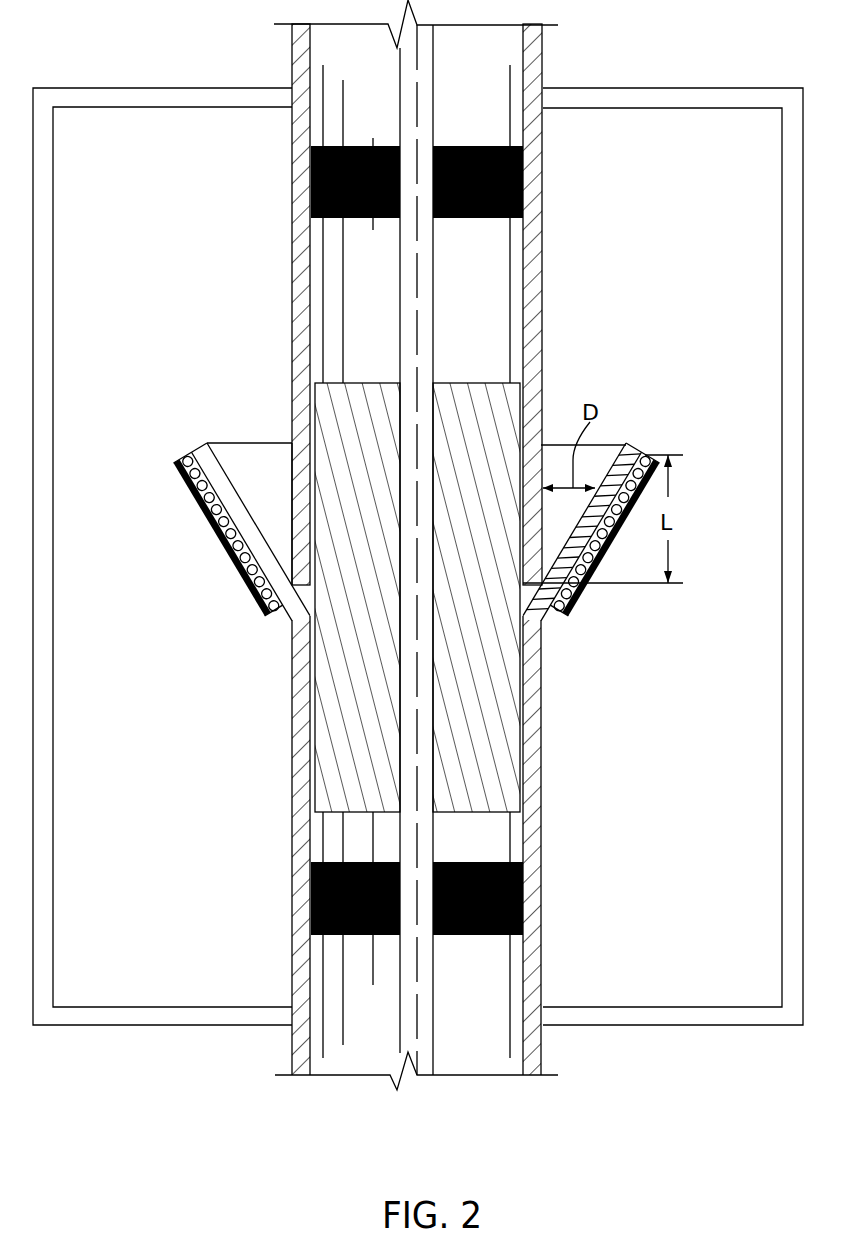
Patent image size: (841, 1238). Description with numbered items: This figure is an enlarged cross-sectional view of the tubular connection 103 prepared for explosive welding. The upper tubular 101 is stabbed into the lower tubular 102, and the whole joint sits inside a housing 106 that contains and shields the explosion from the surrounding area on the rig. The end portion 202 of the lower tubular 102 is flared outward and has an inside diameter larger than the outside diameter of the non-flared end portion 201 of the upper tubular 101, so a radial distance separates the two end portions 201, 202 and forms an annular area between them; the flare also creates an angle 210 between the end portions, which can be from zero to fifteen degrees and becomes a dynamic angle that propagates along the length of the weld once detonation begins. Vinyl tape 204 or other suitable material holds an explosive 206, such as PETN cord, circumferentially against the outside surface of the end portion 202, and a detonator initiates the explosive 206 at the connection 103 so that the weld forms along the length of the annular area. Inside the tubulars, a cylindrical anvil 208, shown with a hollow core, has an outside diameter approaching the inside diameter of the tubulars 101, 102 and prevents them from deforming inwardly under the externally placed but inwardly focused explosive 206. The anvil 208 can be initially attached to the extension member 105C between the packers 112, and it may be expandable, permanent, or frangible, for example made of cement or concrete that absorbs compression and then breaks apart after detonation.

The upper tubular 101 is at (528, 290).
The lower tubular 102 is at (533, 888).
The tubular connection 103 is at (191, 482).
The extension member 105C is at (405, 289).
The housing 106 is at (656, 89).
The packers 112 is at (311, 187).
The end portion of the upper tubular 201 is at (298, 472).
The end portion of the lower tubular 202 is at (625, 462).
The vinyl tape 204 is at (250, 592).
The explosive 206 is at (184, 470).
The anvil 208 is at (508, 712).
The angle 210 is at (242, 500).